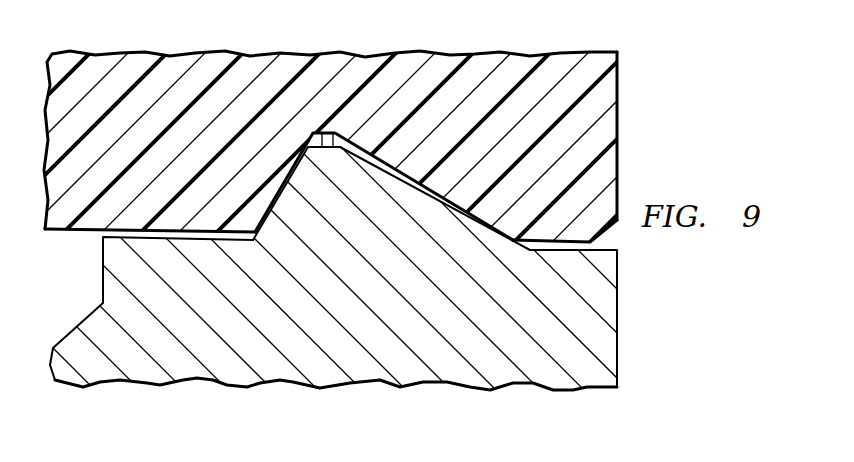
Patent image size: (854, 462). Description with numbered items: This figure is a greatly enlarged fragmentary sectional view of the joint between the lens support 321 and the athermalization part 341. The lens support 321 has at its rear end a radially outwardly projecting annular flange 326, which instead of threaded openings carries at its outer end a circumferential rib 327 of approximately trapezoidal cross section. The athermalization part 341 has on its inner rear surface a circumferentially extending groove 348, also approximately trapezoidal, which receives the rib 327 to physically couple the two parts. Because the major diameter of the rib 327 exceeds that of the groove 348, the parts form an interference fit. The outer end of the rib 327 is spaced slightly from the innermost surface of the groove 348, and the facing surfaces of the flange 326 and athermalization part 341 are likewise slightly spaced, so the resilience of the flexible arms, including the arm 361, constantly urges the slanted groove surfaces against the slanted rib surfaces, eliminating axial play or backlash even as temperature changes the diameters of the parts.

The athermalization part 341 is at (145, 53).
The resiliently flexible arm 361 is at (608, 120).
The circumferential rib 327 is at (336, 141).
The circumferentially extending groove 348 is at (330, 133).
The lens support 321 is at (148, 385).
The annular flange 326 is at (435, 356).